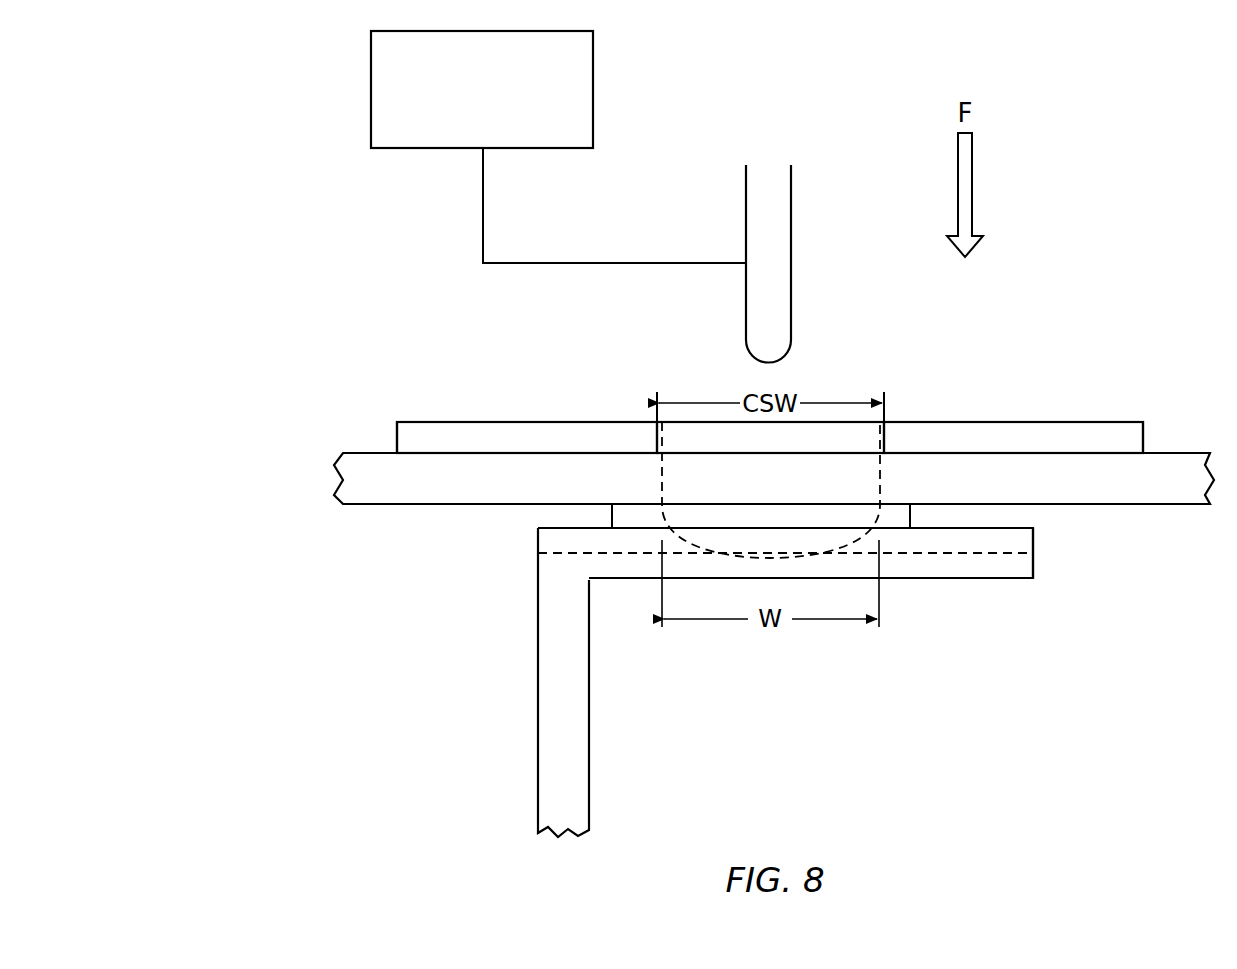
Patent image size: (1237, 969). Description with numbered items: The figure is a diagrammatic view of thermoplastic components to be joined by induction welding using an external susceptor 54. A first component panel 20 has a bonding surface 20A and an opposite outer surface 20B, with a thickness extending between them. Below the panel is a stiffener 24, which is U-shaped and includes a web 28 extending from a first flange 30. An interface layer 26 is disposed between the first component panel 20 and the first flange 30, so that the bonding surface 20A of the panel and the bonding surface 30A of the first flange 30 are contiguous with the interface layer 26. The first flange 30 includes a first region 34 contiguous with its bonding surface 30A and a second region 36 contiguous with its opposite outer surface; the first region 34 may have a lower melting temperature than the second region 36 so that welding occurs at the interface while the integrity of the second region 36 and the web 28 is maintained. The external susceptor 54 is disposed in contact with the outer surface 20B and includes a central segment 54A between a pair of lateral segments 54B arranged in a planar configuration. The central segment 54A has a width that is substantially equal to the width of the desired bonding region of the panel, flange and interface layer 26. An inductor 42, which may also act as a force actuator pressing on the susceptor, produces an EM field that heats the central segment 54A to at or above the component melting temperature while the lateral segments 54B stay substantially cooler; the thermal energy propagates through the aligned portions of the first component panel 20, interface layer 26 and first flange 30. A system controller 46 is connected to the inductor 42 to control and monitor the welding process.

The first component panel 20 is at (288, 486).
The bonding surface 20A is at (370, 505).
The outer surface 20B is at (370, 453).
The stiffener 24 is at (772, 670).
The interface layer 26 is at (642, 522).
The web 28 is at (560, 788).
The first flange 30 is at (985, 562).
The bonding surface 30A is at (1018, 522).
The first region 34 is at (1023, 542).
The second region 36 is at (1017, 572).
The inductor 42 is at (763, 198).
The system controller 46 is at (499, 125).
The external susceptor 54 is at (1130, 382).
The central segment 54A is at (863, 438).
The lateral segments 54B is at (496, 437).